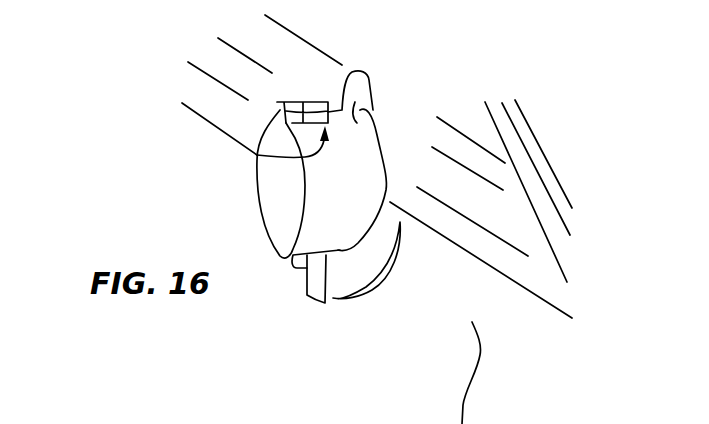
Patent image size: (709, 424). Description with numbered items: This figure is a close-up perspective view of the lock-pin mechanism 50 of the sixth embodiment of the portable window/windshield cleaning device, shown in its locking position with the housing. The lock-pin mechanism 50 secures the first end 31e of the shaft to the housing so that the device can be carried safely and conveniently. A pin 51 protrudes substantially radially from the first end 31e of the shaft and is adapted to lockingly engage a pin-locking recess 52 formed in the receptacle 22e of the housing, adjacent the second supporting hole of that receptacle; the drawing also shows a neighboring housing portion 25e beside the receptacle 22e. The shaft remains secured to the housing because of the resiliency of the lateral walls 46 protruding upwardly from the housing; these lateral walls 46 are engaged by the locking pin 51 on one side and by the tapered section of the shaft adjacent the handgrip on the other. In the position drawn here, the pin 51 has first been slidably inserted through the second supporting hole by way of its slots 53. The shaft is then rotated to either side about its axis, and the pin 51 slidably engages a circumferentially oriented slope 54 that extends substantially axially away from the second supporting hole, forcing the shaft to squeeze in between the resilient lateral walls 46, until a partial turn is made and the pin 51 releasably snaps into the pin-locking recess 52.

The receptacle 22e is at (445, 257).
The rail edge 25e is at (535, 135).
The first end 31e is at (298, 193).
The lateral walls 46 is at (555, 229).
The lock-pin mechanism 50 is at (257, 155).
The pin 51 is at (277, 102).
The pin-locking recess 52 is at (325, 303).
The slots 53 is at (324, 140).
The circumferentially oriented slope 54 is at (344, 258).